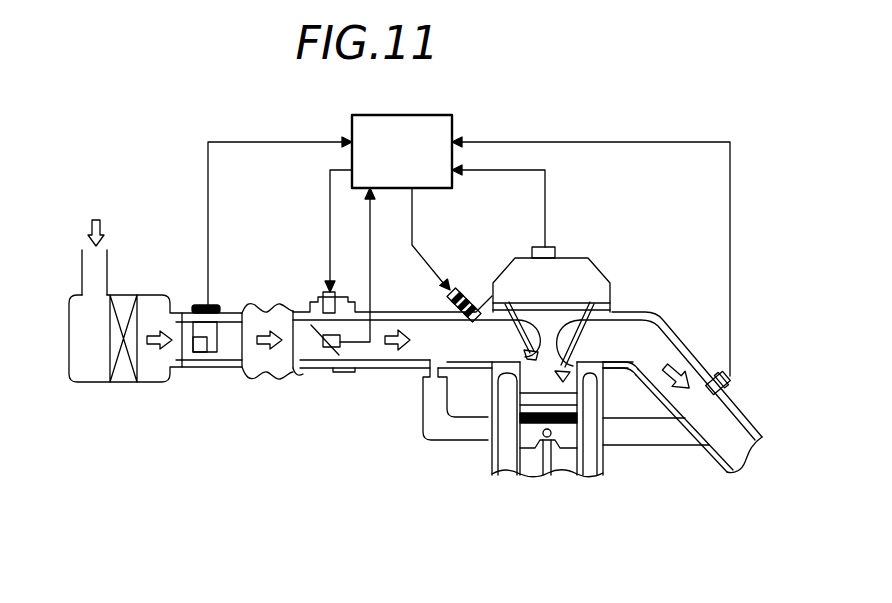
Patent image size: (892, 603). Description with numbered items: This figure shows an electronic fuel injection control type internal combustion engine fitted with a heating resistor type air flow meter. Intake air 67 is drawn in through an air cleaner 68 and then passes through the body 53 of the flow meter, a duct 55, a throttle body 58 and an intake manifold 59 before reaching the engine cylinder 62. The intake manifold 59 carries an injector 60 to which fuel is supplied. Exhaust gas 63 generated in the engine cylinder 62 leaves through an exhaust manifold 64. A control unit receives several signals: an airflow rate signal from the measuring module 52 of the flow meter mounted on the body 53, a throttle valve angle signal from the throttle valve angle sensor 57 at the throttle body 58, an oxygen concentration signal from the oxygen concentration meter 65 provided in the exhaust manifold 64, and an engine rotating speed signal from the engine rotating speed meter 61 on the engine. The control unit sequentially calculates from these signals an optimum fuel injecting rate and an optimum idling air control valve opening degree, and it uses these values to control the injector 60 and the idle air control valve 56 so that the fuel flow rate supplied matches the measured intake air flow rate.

The measuring module 52 is at (210, 305).
The body 53 is at (197, 368).
The duct 55 is at (258, 380).
The idle air control valve 56 is at (325, 292).
The throttle valve angle sensor 57 is at (329, 348).
The throttle body 58 is at (338, 370).
The intake manifold 59 is at (405, 312).
The injector 60 is at (458, 292).
The engine rotating speed meter 61 is at (552, 247).
The engine cylinder 62 is at (526, 458).
The exhaust pipe 63 is at (672, 358).
The exhaust manifold 64 is at (631, 312).
The oxygen concentration meter 65 is at (730, 385).
The intake air 67 is at (96, 219).
The air cleaner 68 is at (134, 296).